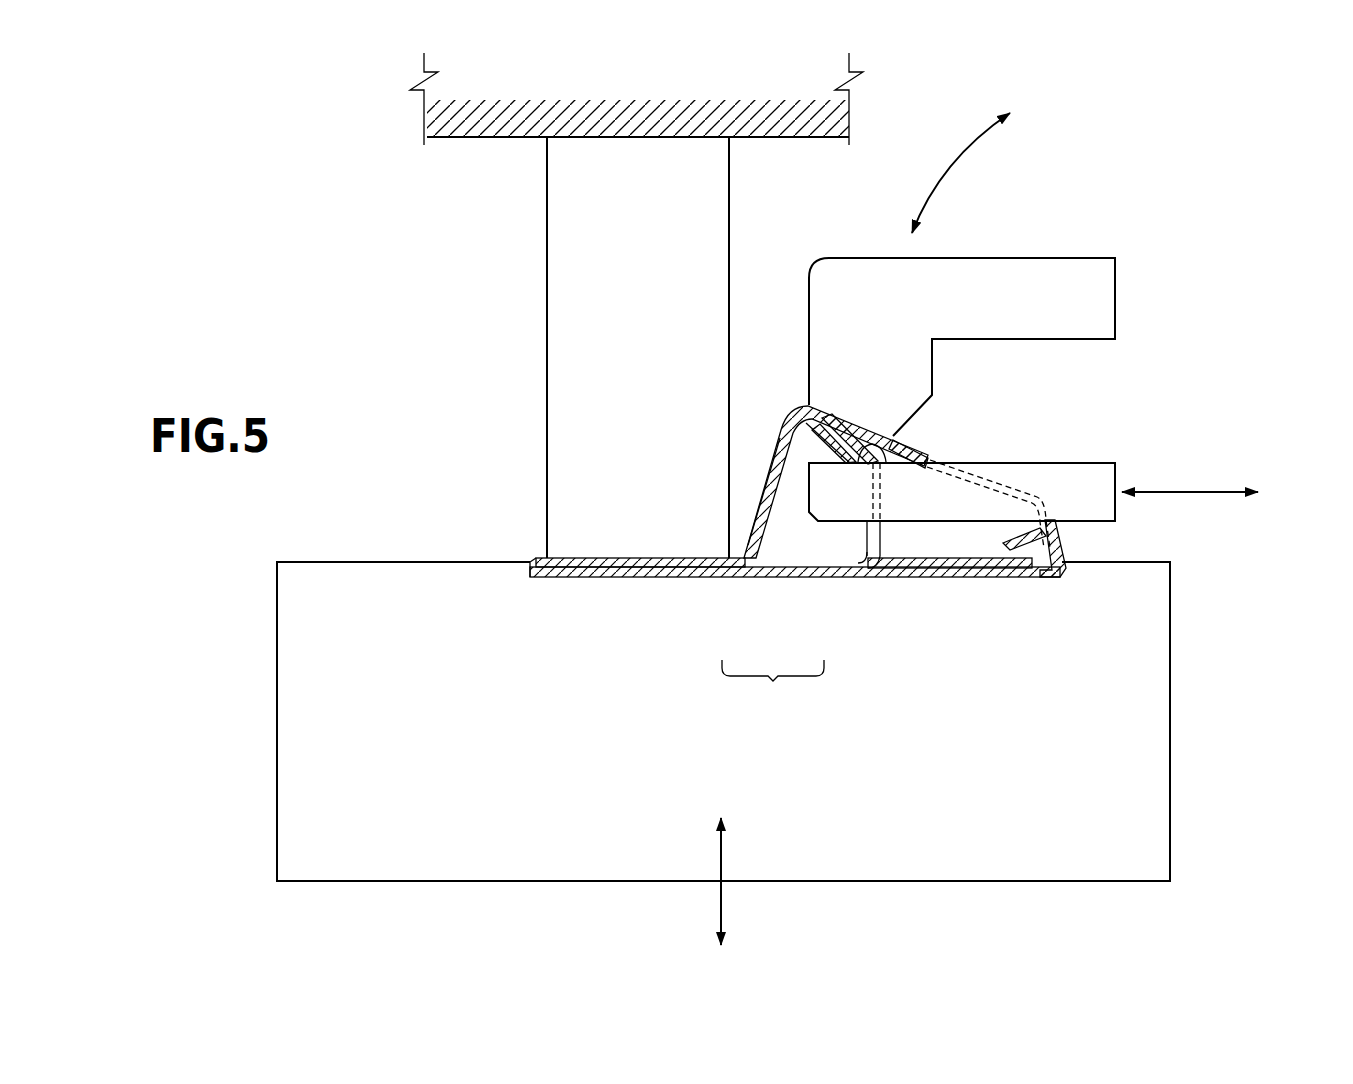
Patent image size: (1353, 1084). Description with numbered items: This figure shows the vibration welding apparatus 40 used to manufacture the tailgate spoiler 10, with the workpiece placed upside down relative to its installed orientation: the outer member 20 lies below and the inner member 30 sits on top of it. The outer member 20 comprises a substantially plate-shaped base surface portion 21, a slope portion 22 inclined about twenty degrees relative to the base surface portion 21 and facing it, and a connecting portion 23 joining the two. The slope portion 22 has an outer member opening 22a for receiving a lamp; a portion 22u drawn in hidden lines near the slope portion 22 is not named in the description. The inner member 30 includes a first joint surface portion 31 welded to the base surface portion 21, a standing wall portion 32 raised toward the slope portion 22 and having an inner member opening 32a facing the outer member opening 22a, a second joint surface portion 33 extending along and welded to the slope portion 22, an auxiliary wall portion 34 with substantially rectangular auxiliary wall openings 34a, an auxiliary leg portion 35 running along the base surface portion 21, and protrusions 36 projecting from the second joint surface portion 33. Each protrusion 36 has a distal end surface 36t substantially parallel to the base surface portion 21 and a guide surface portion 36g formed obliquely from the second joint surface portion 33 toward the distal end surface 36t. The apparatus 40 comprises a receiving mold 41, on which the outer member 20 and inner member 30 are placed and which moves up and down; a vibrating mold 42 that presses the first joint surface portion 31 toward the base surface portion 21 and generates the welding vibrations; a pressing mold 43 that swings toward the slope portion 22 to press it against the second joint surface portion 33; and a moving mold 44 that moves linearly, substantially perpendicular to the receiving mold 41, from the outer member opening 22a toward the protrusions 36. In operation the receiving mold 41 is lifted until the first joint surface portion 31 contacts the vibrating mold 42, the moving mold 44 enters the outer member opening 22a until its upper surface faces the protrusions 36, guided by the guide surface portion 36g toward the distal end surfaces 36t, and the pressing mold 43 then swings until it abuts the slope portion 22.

The spoiler 10 is at (773, 689).
The outer member 20 is at (957, 524).
The base surface portion 21 is at (624, 580).
The slope portion 22 is at (912, 434).
The outer member opening 22a is at (960, 580).
The hidden upper arm portion 22u is at (953, 460).
The connecting portion 23 is at (1068, 548).
The inner member 30 is at (782, 496).
The first joint surface portion 31 is at (578, 556).
The standing wall portion 32 is at (778, 434).
The inner member opening 32a is at (757, 512).
The second joint surface portion 33 is at (833, 433).
The auxiliary wall portion 34 is at (916, 579).
The auxiliary wall openings 34a is at (851, 582).
The auxiliary leg portion 35 is at (1005, 567).
The protrusions 36 is at (808, 420).
The distal end surface 36t is at (796, 480).
The guide surface portion 36g is at (874, 478).
The vibration welding apparatus 40 is at (302, 263).
The receiving mold 41 is at (1128, 735).
The vibrating mold 42 is at (594, 316).
The pressing mold 43 is at (1076, 295).
The moving mold 44 is at (1076, 491).